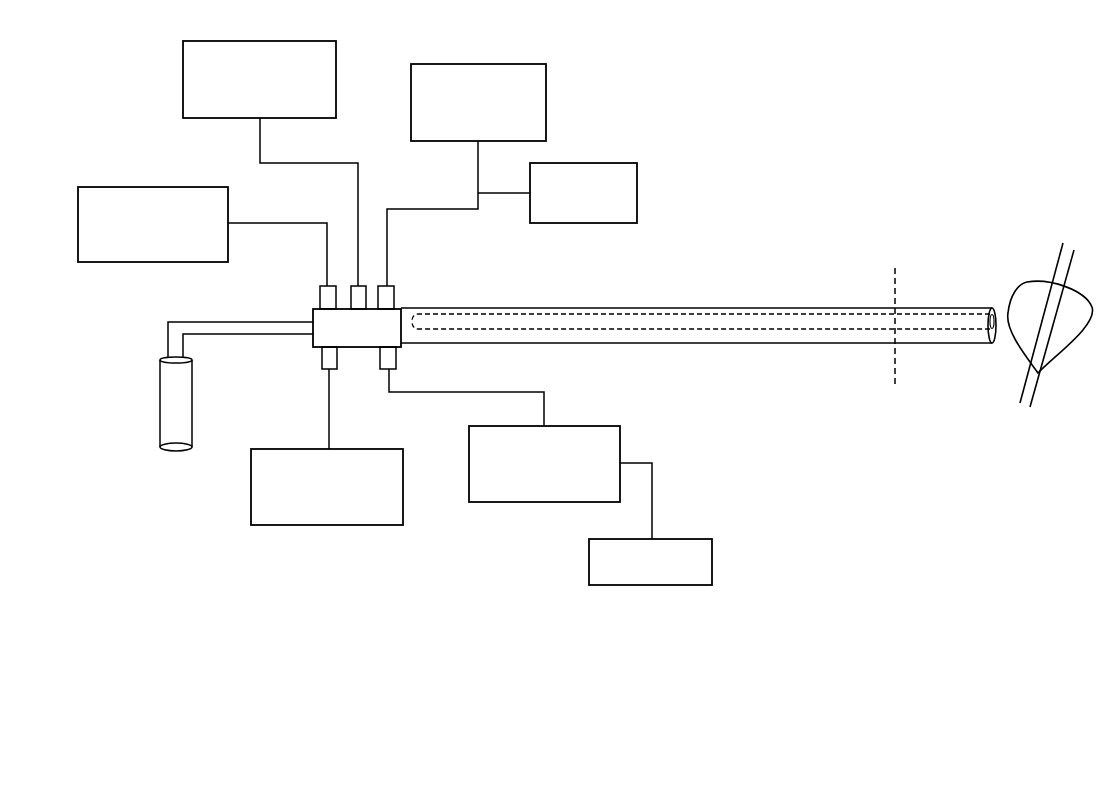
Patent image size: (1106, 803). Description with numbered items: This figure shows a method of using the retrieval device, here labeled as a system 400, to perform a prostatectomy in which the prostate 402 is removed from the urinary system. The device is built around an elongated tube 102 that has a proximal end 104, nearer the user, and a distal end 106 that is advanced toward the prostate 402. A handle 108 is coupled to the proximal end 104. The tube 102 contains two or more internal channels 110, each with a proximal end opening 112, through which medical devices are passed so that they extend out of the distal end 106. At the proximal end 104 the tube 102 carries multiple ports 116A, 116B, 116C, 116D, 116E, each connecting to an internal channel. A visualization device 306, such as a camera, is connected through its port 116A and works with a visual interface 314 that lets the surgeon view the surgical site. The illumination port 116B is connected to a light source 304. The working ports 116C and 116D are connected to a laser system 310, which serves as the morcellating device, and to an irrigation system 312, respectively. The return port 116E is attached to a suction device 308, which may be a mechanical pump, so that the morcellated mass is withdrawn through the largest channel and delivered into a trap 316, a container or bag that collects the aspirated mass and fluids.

The tube 102 is at (675, 307).
The proximal end 104 is at (368, 290).
The distal end 106 is at (978, 308).
The handle 108 is at (168, 330).
The internal channels 110 is at (696, 298).
The proximal end opening 112 is at (417, 322).
The port 116A is at (390, 285).
The illumination port 116B is at (358, 285).
The working port 116C is at (321, 357).
The working port 116D is at (321, 296).
The return port 116E is at (397, 357).
The light source 304 is at (336, 77).
The visualization device 306 is at (480, 64).
The suction device 308 is at (562, 426).
The laser system 310 is at (288, 450).
The irrigation system 312 is at (152, 187).
The visual interface 314 is at (582, 163).
The trap 316 is at (682, 539).
The surgical system 400 is at (981, 86).
The prostate 402 is at (1020, 337).